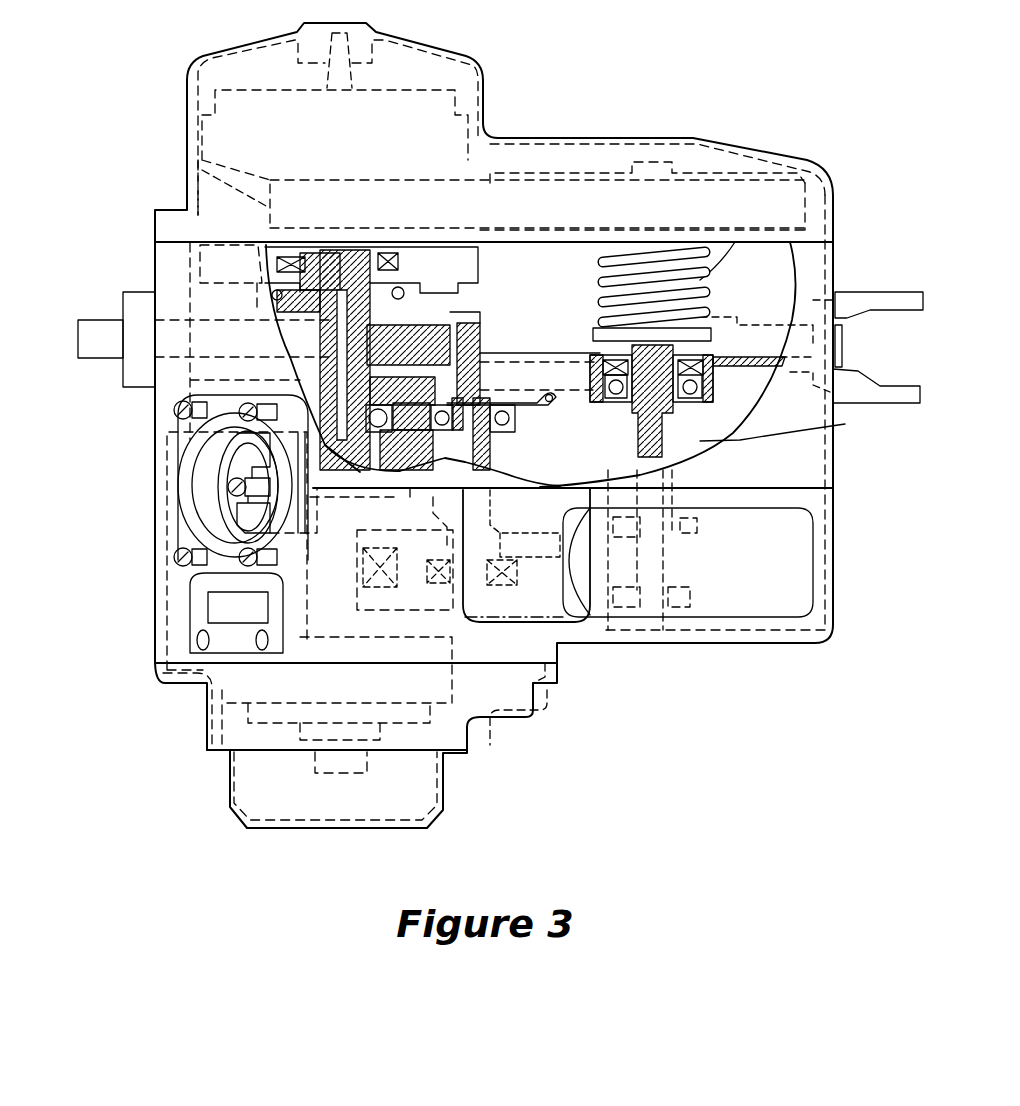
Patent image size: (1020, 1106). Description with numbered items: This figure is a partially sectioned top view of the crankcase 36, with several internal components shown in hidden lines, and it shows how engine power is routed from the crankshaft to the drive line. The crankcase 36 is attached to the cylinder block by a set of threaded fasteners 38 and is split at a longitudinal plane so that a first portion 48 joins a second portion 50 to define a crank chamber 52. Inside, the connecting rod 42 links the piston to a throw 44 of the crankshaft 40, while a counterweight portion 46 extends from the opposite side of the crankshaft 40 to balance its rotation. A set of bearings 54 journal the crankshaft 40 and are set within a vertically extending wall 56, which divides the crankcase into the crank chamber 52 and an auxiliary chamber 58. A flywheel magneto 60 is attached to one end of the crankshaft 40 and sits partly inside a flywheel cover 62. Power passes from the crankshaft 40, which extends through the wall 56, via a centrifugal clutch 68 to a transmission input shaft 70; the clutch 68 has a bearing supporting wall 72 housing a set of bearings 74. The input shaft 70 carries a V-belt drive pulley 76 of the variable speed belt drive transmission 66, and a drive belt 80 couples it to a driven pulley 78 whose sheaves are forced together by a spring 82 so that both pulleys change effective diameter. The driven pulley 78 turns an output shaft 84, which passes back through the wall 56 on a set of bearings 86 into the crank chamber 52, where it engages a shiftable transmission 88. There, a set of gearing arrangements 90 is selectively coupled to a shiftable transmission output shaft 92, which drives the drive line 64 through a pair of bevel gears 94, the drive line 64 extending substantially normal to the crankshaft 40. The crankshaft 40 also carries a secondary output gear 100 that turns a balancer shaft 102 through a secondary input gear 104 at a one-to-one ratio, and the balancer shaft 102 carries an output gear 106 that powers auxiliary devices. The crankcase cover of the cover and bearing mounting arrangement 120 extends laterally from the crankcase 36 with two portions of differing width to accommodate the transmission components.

The crankcase 36 is at (125, 657).
The threaded fasteners 38 is at (173, 405).
The crankshaft 40 is at (297, 340).
The connecting rod 42 is at (240, 477).
The throw 44 is at (243, 517).
The counterweight portion 46 is at (495, 455).
The first portion 48 is at (153, 515).
The second portion 50 is at (153, 427).
The crank chamber 52 is at (227, 480).
The bearings 54 is at (377, 408).
The vertically extending wall 56 is at (525, 395).
The auxiliary chamber 58 is at (563, 253).
The flywheel magneto 60 is at (458, 692).
The bottom cap 62 is at (453, 757).
The drive line 64 is at (563, 307).
The variable speed belt drive transmission 66 is at (436, 112).
The centrifugal clutch 68 is at (320, 410).
The transmission input shaft 70 is at (352, 72).
The bearing supporting wall 72 is at (480, 358).
The bearings 74 is at (403, 292).
The V-belt drive pulley 76 is at (235, 88).
The driven pulley 78 is at (747, 173).
The drive belt 80 is at (202, 170).
The spring 82 is at (697, 277).
The output shaft 84 is at (795, 427).
The bearings 86 is at (713, 415).
The shiftable transmission 88 is at (785, 490).
The gearing arrangements 90 is at (697, 527).
The shiftable transmission output shaft 92 is at (657, 563).
The bevel gears 94 is at (708, 298).
The secondary output gear 100 is at (408, 560).
The balancer shaft 102 is at (497, 460).
The secondary input gear 104 is at (576, 620).
The output gear 106 is at (537, 705).
The crankcase cover and bearing mounting arrangement 120 is at (656, 135).